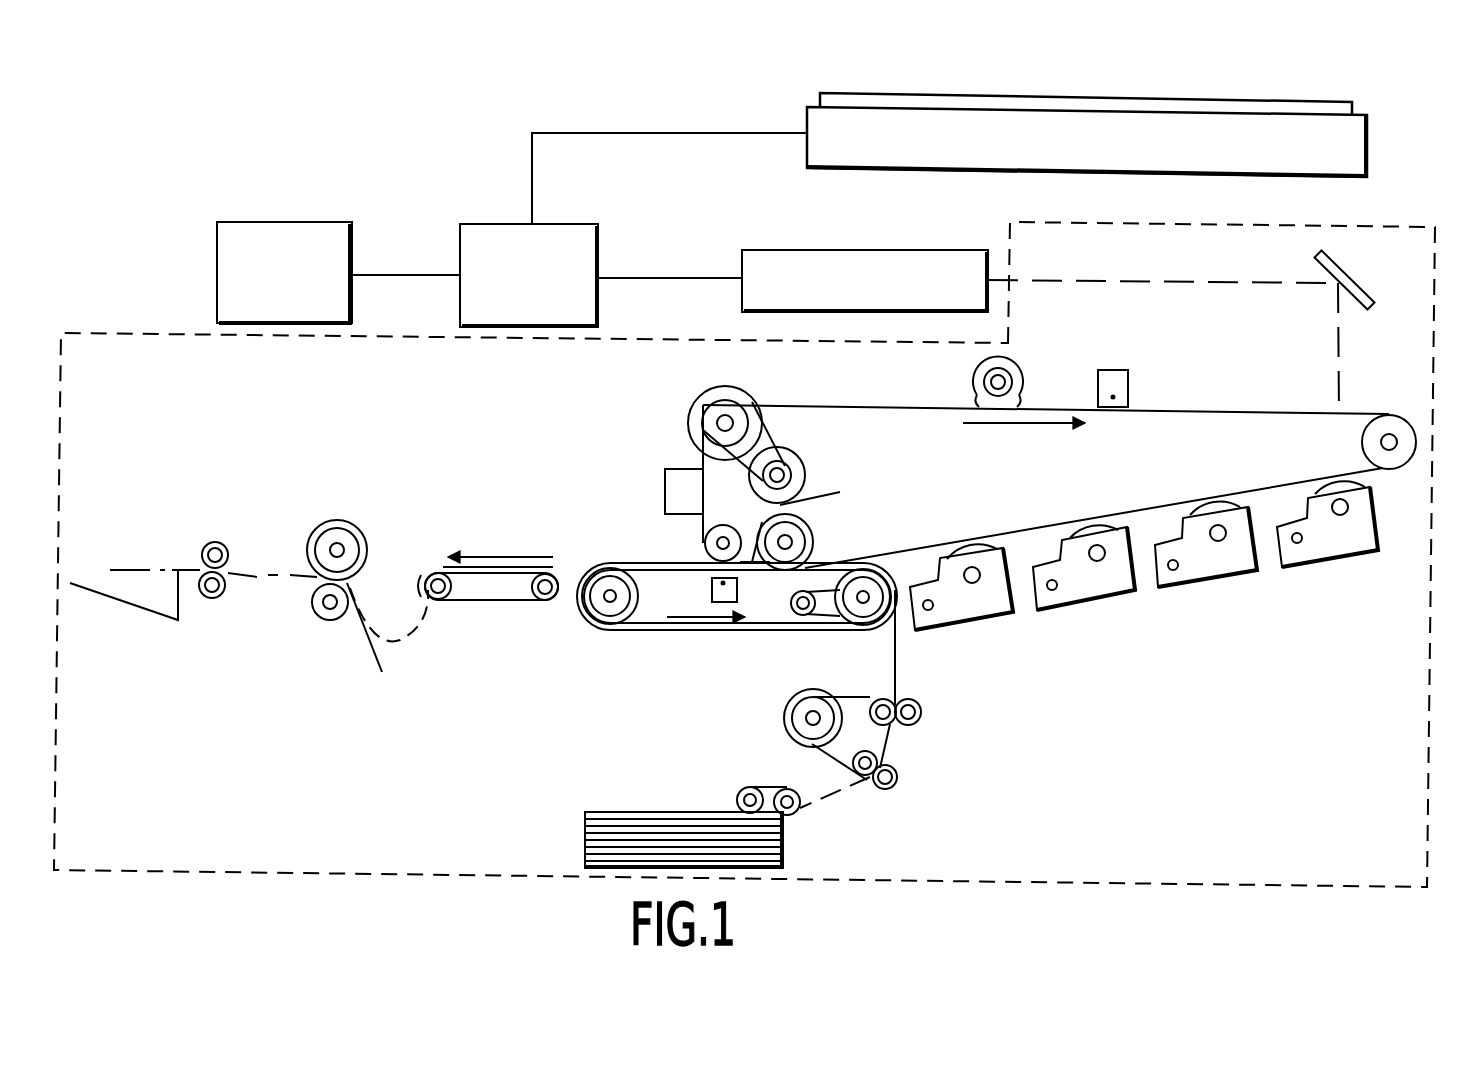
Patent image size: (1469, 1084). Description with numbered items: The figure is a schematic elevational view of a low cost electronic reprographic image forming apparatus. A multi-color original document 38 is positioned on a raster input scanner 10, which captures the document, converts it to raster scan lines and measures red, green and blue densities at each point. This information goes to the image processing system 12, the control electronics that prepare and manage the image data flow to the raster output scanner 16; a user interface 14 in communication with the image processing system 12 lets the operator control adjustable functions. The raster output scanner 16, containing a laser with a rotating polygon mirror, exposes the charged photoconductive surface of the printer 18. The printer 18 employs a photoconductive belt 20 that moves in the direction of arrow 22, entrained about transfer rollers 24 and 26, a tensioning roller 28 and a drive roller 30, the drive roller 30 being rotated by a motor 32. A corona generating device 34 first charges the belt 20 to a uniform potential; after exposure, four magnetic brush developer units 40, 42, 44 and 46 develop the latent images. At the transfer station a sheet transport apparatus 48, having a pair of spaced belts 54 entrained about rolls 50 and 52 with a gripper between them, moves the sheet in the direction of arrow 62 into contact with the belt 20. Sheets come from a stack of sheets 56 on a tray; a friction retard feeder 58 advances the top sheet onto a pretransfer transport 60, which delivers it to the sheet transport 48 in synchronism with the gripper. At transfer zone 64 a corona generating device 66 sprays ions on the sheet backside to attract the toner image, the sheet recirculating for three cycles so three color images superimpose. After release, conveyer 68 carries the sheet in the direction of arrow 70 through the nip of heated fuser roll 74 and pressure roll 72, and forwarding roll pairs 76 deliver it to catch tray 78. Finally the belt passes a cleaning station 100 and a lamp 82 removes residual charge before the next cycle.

The raster input scanner 10 is at (785, 117).
The image processing system 12 is at (604, 212).
The user interface 14 is at (327, 208).
The raster output scanner 16 is at (894, 238).
The printer 18 is at (1360, 210).
The photoconductive belt 20 is at (1215, 412).
The arrow 22 is at (1015, 425).
The transfer roller 24 is at (703, 545).
The transfer roller 26 is at (815, 536).
The tensioning roller 28 is at (1384, 428).
The drive roller 30 is at (704, 405).
The motor 32 is at (808, 476).
The corona generating device 34 is at (1112, 370).
The multi-color original document 38 is at (1340, 107).
The developer unit 40 is at (1343, 565).
The developer unit 42 is at (1230, 577).
The developer unit 44 is at (1107, 598).
The developer unit 46 is at (975, 627).
The sheet transport apparatus 48 is at (647, 645).
The roll 50 is at (592, 618).
The roll 52 is at (863, 620).
The belts 54 is at (747, 632).
The stack of sheets 56 is at (602, 812).
The friction retard feeder 58 is at (767, 788).
The pretransfer transport 60 is at (890, 735).
The arrow 62 is at (712, 625).
The transfer zone 64 is at (793, 508).
The corona generating device 66 is at (737, 588).
The conveyer 68 is at (483, 600).
The arrow 70 is at (527, 557).
The pressure roll 72 is at (312, 612).
The heated fuser roll 74 is at (367, 537).
The forwarding roll pairs 76 is at (230, 552).
The catch tray 78 is at (108, 600).
The lamp 82 is at (1020, 363).
The cleaning station 100 is at (683, 493).